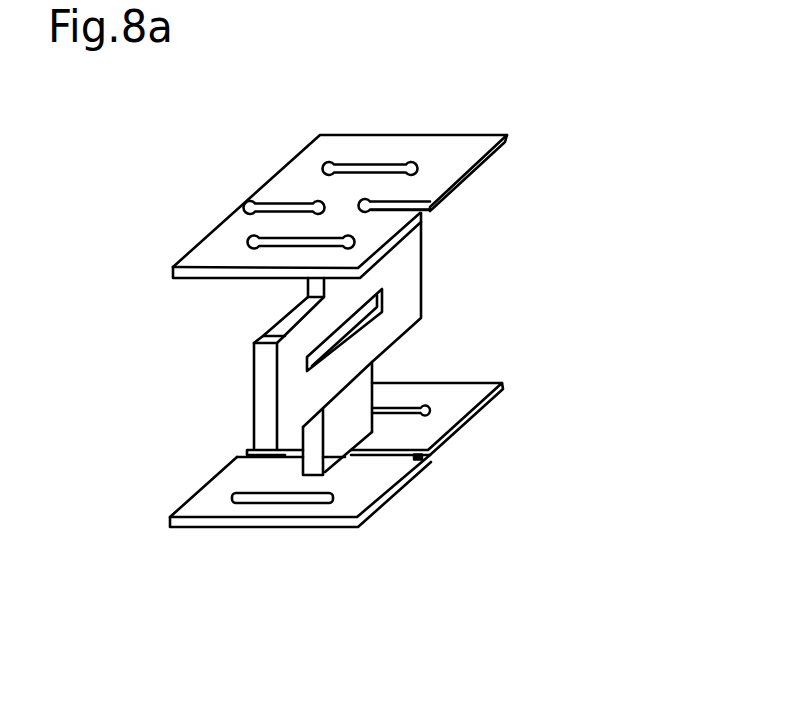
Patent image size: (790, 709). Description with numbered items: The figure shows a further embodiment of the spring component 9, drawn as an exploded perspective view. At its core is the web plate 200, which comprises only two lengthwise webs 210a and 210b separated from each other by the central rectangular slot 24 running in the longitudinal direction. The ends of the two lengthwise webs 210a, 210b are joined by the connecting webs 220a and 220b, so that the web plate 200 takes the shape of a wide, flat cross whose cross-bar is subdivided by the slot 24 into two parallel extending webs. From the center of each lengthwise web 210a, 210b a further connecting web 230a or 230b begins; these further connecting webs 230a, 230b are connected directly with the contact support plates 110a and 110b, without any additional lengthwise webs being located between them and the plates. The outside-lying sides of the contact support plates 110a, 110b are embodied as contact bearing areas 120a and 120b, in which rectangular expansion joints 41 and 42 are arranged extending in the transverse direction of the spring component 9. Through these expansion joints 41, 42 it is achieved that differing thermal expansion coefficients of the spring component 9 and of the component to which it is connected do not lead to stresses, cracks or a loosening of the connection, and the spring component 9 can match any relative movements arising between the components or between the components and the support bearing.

The spring component 9 is at (587, 221).
The expansion joint 41 is at (350, 166).
The expansion joint 42 is at (428, 407).
The contact support plate 110a is at (433, 178).
The contact bearing area 120a is at (431, 154).
The contact support plate 110b is at (432, 427).
The contact bearing area 120b is at (383, 516).
The web plate 200 is at (165, 397).
The lengthwise web 210a is at (312, 333).
The lengthwise web 210b is at (373, 342).
The connecting web 220a is at (288, 377).
The connecting web 220b is at (402, 275).
The further connecting web 230a is at (308, 290).
The further connecting web 230b is at (303, 442).
The rectangular slot 24 is at (383, 316).